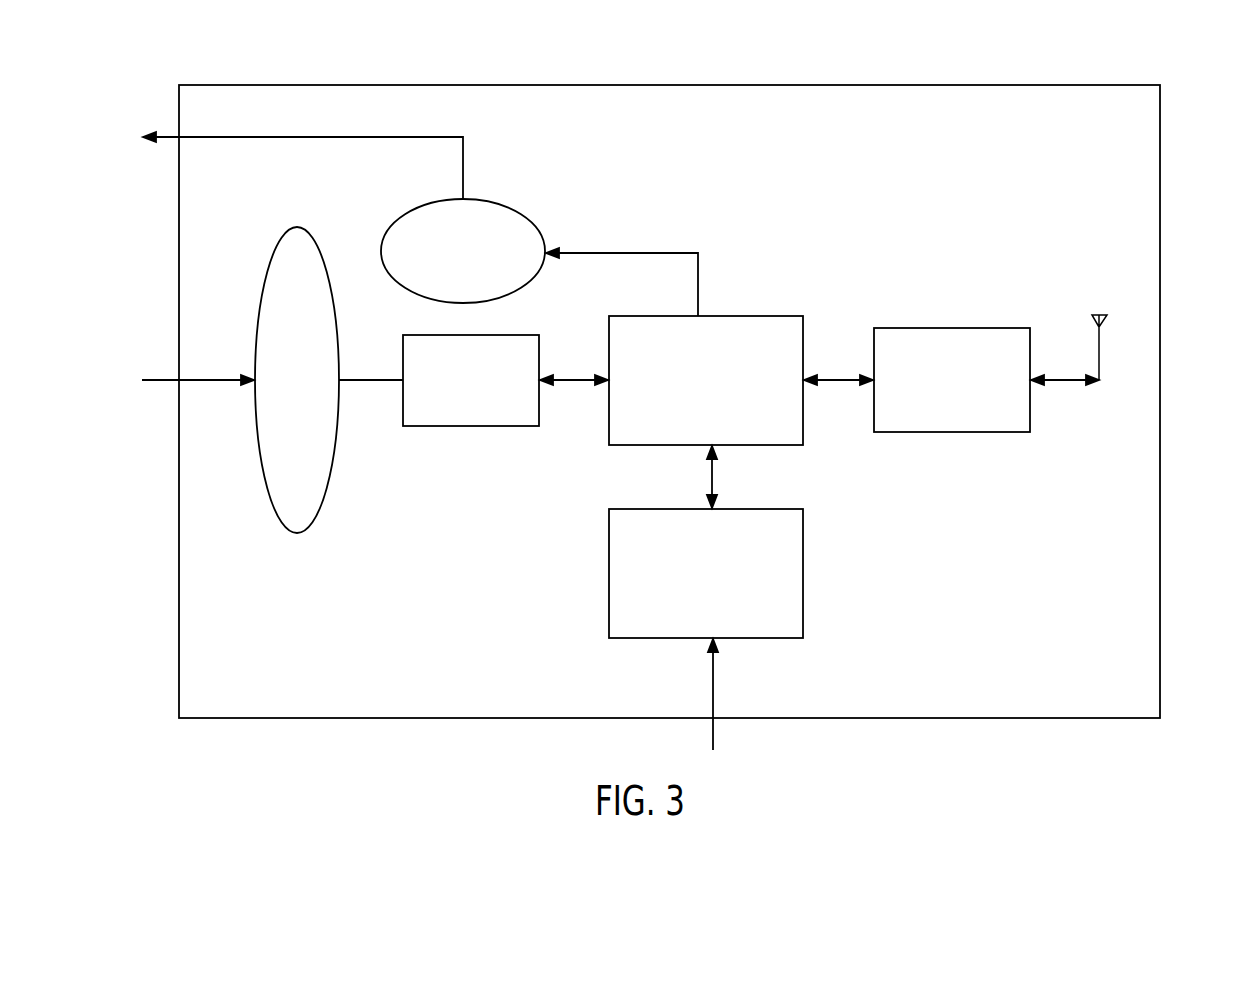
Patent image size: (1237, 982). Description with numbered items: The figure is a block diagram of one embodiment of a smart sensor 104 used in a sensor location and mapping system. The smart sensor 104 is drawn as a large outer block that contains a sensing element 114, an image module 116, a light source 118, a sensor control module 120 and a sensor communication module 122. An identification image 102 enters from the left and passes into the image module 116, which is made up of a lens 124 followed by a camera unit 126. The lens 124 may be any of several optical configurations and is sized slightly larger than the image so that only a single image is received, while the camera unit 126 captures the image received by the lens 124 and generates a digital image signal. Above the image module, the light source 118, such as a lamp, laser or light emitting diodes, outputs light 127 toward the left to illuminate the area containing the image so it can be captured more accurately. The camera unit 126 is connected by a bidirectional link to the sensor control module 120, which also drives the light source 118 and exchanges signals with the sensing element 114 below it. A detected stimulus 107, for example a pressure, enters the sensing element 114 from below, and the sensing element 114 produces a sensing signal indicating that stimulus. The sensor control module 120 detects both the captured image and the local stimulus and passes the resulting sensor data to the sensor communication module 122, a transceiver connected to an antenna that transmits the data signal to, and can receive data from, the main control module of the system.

The identification image 102 is at (163, 377).
The smart sensor 104 is at (1161, 172).
The detected stimulus 107 is at (714, 693).
The sensing element 114 is at (780, 640).
The image module 116 is at (393, 476).
The light source 118 is at (510, 198).
The sensor control module 120 is at (768, 314).
The sensor communication module 122 is at (992, 327).
The lens 124 is at (313, 228).
The camera unit 126 is at (522, 428).
The light 127 is at (163, 133).